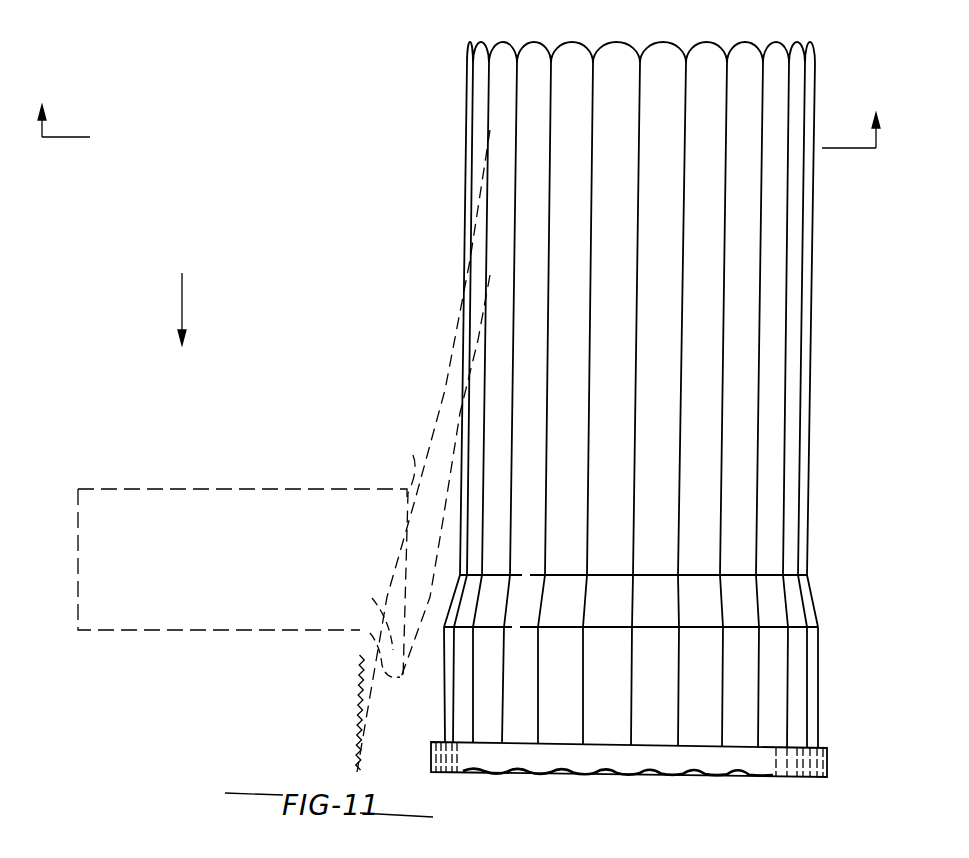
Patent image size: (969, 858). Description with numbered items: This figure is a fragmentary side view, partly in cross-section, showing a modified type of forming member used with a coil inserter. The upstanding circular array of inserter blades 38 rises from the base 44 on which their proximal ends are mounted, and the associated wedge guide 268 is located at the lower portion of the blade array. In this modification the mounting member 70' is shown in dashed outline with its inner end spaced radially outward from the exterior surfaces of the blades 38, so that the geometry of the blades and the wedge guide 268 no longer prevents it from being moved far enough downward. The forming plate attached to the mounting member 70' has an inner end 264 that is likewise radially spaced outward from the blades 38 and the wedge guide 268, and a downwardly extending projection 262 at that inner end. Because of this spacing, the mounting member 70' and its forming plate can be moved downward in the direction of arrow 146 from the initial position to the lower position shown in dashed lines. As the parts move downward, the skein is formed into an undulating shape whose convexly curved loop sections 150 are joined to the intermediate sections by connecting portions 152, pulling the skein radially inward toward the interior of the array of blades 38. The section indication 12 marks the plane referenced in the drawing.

The blades 38 is at (573, 50).
The base 44 is at (620, 767).
The axis direction indicator 12 is at (461, 141).
The arrow 146 is at (183, 305).
The connecting portions 152 is at (477, 237).
The inner ends 264 is at (413, 455).
The downwardly extending projections 262 is at (372, 598).
The mounting members 70' is at (242, 542).
The loop sections 150 is at (362, 693).
The wedge guide 268 is at (457, 703).